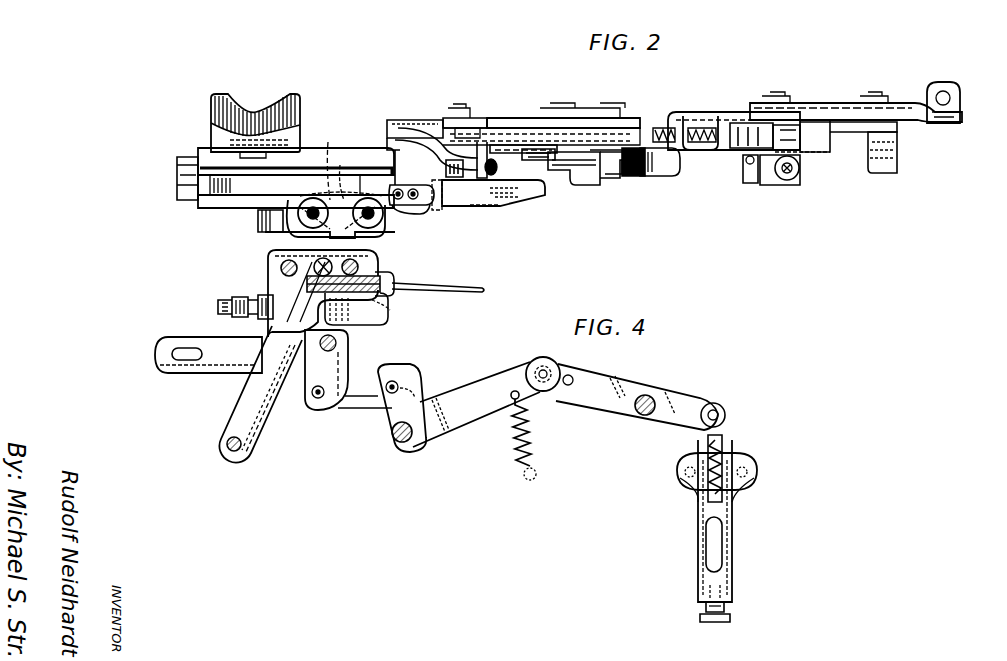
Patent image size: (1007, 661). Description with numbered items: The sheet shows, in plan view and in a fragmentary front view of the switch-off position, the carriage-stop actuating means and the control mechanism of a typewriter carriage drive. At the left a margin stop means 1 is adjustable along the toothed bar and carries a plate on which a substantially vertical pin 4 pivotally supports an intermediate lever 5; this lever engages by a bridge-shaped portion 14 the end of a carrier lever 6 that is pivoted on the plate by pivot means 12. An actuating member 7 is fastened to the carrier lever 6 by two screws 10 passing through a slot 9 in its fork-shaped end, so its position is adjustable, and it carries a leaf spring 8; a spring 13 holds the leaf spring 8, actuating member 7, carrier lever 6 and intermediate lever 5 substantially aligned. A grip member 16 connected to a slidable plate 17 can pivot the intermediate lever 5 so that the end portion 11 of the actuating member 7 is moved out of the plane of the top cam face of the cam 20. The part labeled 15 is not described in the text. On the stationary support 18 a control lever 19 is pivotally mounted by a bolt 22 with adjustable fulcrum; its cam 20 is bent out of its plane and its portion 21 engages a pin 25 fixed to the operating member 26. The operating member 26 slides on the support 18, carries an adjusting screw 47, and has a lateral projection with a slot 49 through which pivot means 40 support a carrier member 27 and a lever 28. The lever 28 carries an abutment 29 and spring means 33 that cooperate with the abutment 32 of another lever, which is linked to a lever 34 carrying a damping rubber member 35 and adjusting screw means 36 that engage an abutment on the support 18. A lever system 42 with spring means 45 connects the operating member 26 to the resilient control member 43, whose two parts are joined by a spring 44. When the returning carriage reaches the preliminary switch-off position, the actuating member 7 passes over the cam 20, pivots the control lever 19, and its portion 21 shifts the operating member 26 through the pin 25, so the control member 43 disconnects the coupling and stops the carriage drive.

In FIG. 2, the margin stop means 1 is at (200, 152).
In FIG. 2, the vertical pin 4 is at (310, 198).
In FIG. 2, the intermediate lever 5 is at (266, 233).
In FIG. 2, the carrier lever 6 is at (341, 173).
In FIG. 4, the carrier lever 6 is at (368, 276).
In FIG. 4, the actuating member 7 is at (388, 305).
In FIG. 2, the leaf spring 8 is at (500, 205).
In FIG. 4, the leaf spring 8 is at (483, 291).
In FIG. 2, the slot 9 is at (437, 216).
In FIG. 2, the screws 10 is at (414, 185).
In FIG. 2, the end portion 11 is at (493, 193).
In FIG. 4, the end portion 11 is at (390, 286).
In FIG. 2, the pivot means 12 is at (368, 198).
In FIG. 2, the spring 13 is at (396, 216).
In FIG. 2, the bridge-shaped portion 14 is at (331, 162).
In FIG. 2, the roller carrier 15 is at (374, 229).
In FIG. 2, the grip member 16 is at (213, 118).
In FIG. 2, the plate 17 is at (258, 218).
In FIG. 2, the support 18 is at (758, 122).
In FIG. 2, the control lever 19 is at (568, 180).
In FIG. 4, the control lever 19 is at (230, 420).
In FIG. 2, the cam 20 is at (605, 185).
In FIG. 4, the cam 20 is at (378, 318).
In FIG. 2, the portion 21 is at (526, 144).
In FIG. 4, the portion 21 is at (266, 258).
In FIG. 4, the bolt 22 is at (234, 452).
In FIG. 2, the pin 25 is at (540, 160).
In FIG. 4, the pin 25 is at (324, 283).
In FIG. 2, the operating member 26 is at (488, 142).
In FIG. 4, the operating member 26 is at (266, 272).
In FIG. 2, the carrier member 27 is at (444, 128).
In FIG. 2, the lever 28 is at (460, 130).
In FIG. 2, the abutment 29 is at (616, 174).
In FIG. 2, the abutment 32 is at (650, 176).
In FIG. 2, the spring means 33 is at (634, 178).
In FIG. 2, the lever 34 is at (720, 114).
In FIG. 2, the rubber member 35 is at (738, 152).
In FIG. 2, the adjusting screw means 36 is at (668, 148).
In FIG. 2, the pivot means 40 is at (398, 120).
In FIG. 2, the lever system 42 is at (830, 104).
In FIG. 4, the lever system 42 is at (385, 412).
In FIG. 2, the control member 43 is at (961, 100).
In FIG. 4, the control member 43 is at (698, 546).
In FIG. 4, the spring 44 is at (728, 462).
In FIG. 4, the spring means 45 is at (516, 424).
In FIG. 2, the adjusting screw 47 is at (446, 165).
In FIG. 4, the adjusting screw 47 is at (232, 312).
In FIG. 4, the slot 49 is at (172, 354).